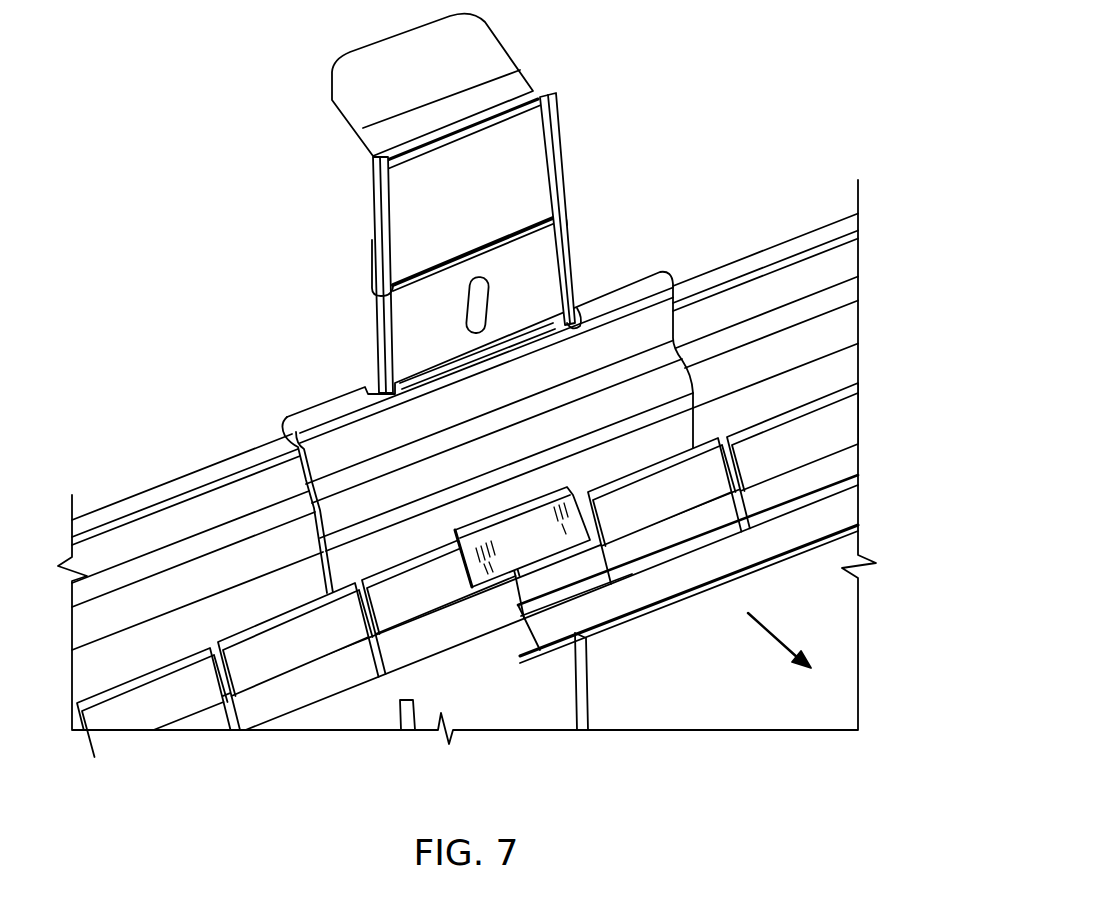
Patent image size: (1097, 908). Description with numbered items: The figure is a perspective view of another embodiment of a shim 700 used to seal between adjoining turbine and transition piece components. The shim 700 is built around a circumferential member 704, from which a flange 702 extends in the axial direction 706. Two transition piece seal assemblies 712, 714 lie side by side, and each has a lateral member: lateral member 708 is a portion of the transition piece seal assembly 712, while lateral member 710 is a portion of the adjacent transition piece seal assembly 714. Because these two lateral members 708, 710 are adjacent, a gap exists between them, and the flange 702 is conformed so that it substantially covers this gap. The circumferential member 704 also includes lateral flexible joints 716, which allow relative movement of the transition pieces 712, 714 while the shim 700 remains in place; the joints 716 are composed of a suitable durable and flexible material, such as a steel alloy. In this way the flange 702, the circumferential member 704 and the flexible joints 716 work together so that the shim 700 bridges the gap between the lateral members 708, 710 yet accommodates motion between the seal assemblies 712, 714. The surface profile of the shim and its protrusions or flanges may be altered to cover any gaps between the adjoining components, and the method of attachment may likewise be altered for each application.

The shim 700 is at (655, 58).
The flange 702 is at (530, 540).
The circumferential member 704 is at (588, 463).
The axial direction 706 is at (776, 632).
The lateral member 708 is at (420, 597).
The lateral member 710 is at (695, 480).
The transition piece seal assembly 712 is at (247, 552).
The transition piece seal assembly 714 is at (812, 338).
The lateral flexible joints 716 is at (576, 300).